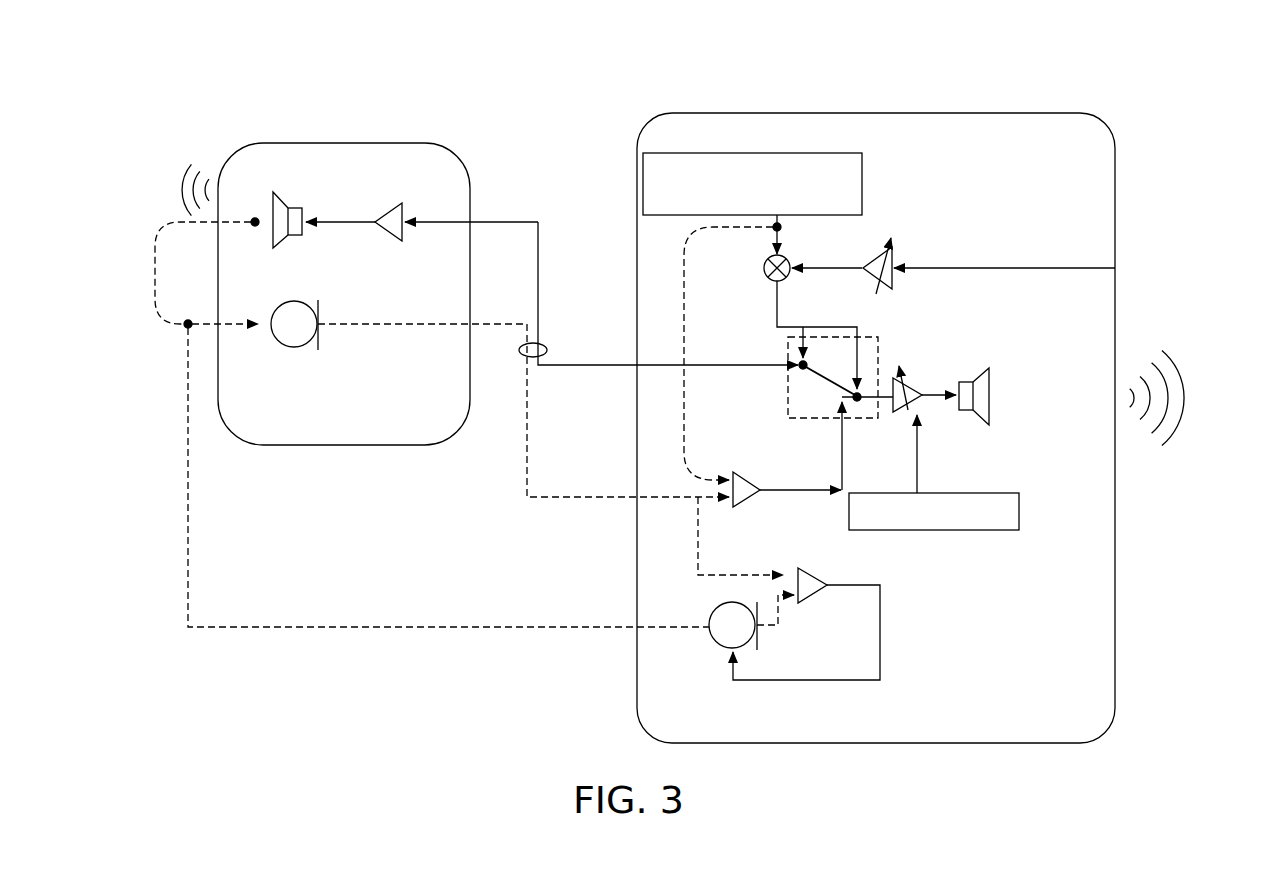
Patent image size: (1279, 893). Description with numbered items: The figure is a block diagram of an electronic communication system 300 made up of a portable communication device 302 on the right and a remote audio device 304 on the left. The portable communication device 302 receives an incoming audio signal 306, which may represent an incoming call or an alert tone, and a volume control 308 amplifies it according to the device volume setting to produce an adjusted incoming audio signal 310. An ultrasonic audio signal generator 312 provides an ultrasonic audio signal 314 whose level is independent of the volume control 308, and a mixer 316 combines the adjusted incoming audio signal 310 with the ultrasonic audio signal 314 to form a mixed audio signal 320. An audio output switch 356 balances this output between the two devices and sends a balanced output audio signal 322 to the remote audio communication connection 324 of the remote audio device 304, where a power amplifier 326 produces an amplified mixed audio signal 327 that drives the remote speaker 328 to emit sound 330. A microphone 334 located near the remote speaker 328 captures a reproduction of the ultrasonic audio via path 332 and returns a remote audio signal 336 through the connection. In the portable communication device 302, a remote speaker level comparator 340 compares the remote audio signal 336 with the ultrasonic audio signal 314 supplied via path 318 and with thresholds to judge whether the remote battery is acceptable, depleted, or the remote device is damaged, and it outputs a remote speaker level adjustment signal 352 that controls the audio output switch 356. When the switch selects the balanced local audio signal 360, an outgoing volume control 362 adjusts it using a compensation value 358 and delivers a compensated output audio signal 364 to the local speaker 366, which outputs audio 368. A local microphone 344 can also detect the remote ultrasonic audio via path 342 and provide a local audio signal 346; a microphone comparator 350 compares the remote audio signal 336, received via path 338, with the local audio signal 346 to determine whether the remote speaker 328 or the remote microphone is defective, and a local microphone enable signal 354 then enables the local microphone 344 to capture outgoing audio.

The electronic communication system 300 is at (266, 42).
The portable communication device 302 is at (882, 113).
The remote audio device 304 is at (345, 143).
The incoming audio signal 306 is at (998, 267).
The volume control 308 is at (894, 256).
The adjusted incoming audio signal 310 is at (838, 266).
The ultrasonic audio signal generator 312 is at (862, 185).
The ultrasonic audio signal 314 is at (773, 236).
The mixer 316 is at (767, 280).
The path 318 is at (686, 340).
The mixed audio signal 320 is at (836, 325).
The balanced output audio signal 322 is at (588, 368).
The remote audio communication connection 324 is at (550, 343).
The power amplifier 326 is at (387, 241).
The amplified mixed audio signal 327 is at (330, 226).
The remote speaker 328 is at (294, 207).
The sound 330 is at (180, 192).
The path 332 is at (155, 272).
The microphone 334 is at (295, 348).
The remote audio signal 336 is at (578, 499).
The path 338 is at (740, 573).
The remote speaker level comparator 340 is at (745, 471).
The path 342 is at (435, 629).
The local microphone 344 is at (716, 640).
The local audio signal 346 is at (776, 627).
The microphone comparator 350 is at (815, 604).
The remote speaker level adjustment signal 352 is at (840, 478).
The local microphone enable signal 354 is at (880, 630).
The audio output switch 356 is at (788, 392).
The compensation value 358 is at (1019, 512).
The balanced local audio signal 360 is at (868, 400).
The outgoing volume control 362 is at (911, 386).
The compensated output audio signal 364 is at (934, 398).
The local speaker 366 is at (990, 380).
The audio 368 is at (1185, 398).